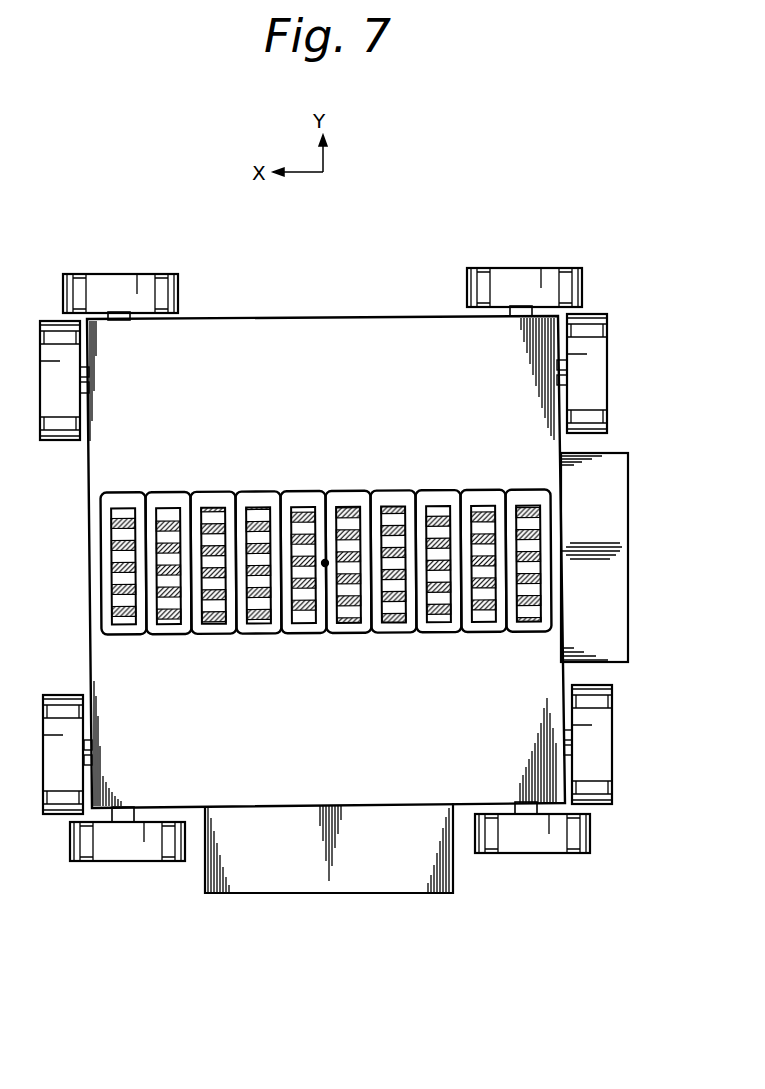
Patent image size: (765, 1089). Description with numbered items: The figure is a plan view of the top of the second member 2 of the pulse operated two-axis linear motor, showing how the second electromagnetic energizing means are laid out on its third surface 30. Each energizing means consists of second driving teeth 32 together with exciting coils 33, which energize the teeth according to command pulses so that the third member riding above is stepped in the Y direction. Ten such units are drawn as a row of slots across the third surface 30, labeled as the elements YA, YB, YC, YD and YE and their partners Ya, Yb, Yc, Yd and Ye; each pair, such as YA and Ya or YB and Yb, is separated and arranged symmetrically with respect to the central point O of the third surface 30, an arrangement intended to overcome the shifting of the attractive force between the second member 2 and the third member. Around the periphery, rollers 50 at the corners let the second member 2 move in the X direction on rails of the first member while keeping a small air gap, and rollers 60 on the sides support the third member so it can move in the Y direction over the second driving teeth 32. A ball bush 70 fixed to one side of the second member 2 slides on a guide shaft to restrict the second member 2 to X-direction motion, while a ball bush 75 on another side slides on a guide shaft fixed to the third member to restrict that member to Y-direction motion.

The second member 2 is at (87, 480).
The third surface 30 is at (506, 775).
The second driving teeth 32 is at (211, 509).
The exciting coils 33 is at (311, 493).
The roller 50 is at (108, 283).
The roller 60 is at (56, 442).
The ball bush 70 is at (308, 895).
The ball bush 75 is at (616, 662).
The central point O is at (325, 566).
The second electromagnetic energizing element YA is at (124, 610).
The second electromagnetic energizing element YB is at (166, 516).
The second electromagnetic energizing element YC is at (216, 605).
The second electromagnetic energizing element YD is at (257, 549).
The second electromagnetic energizing element YE is at (305, 600).
The second electromagnetic energizing element Ya is at (530, 593).
The second electromagnetic energizing element Yb is at (482, 536).
The second electromagnetic energizing element Yc is at (437, 600).
The second electromagnetic energizing element Yd is at (392, 549).
The second electromagnetic energizing element Ye is at (348, 600).